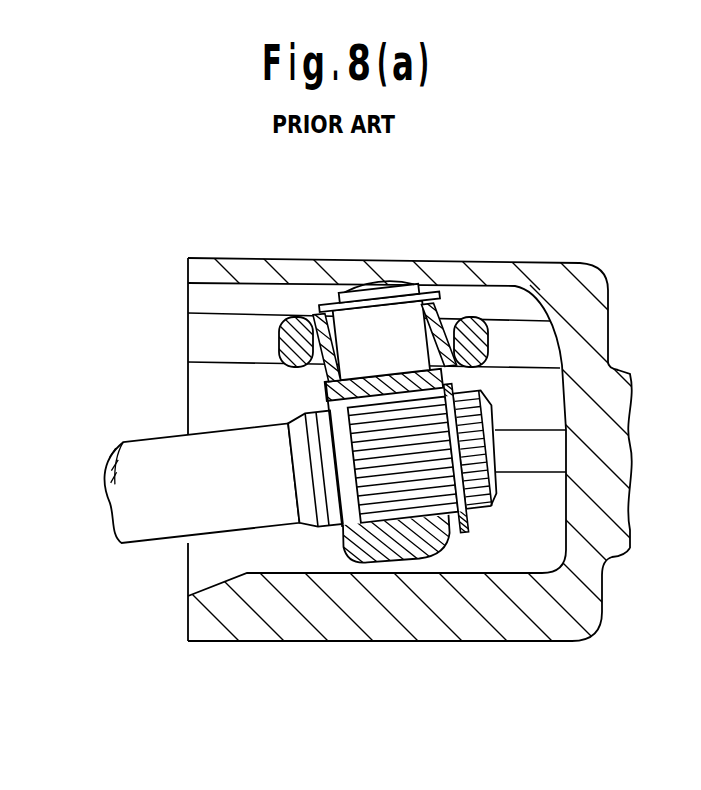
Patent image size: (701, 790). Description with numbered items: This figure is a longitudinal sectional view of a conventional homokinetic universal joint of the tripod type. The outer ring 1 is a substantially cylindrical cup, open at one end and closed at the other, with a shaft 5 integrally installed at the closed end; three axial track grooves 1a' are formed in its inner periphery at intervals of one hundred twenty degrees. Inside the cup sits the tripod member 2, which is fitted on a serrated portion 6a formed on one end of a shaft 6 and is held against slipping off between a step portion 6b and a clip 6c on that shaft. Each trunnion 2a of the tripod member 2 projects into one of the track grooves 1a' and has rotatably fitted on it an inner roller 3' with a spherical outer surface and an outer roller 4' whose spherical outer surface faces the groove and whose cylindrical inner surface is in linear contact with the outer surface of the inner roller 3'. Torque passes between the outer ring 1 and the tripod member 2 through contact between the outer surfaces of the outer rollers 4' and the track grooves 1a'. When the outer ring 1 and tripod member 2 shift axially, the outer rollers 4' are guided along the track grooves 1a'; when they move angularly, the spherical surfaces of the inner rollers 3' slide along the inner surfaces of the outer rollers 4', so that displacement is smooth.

The outer ring 1 is at (516, 270).
The track groove 1a' is at (149, 449).
The tripod member 2 is at (378, 556).
The trunnion 2a is at (382, 322).
The inner roller 3' is at (380, 296).
The outer roller 4' is at (386, 297).
The shaft 5 is at (612, 540).
The shaft 6 is at (140, 523).
The serrated portion 6a is at (412, 508).
The step portion 6b is at (327, 518).
The clip 6c is at (470, 535).